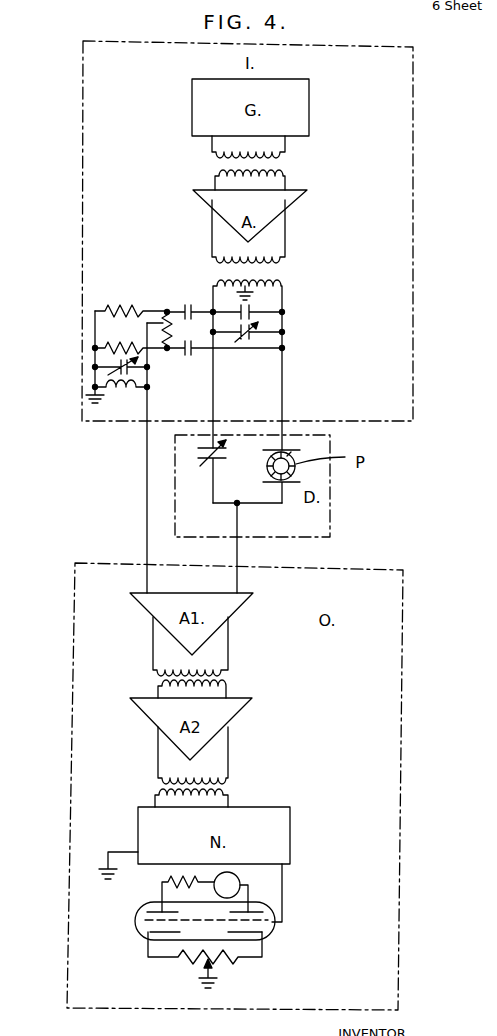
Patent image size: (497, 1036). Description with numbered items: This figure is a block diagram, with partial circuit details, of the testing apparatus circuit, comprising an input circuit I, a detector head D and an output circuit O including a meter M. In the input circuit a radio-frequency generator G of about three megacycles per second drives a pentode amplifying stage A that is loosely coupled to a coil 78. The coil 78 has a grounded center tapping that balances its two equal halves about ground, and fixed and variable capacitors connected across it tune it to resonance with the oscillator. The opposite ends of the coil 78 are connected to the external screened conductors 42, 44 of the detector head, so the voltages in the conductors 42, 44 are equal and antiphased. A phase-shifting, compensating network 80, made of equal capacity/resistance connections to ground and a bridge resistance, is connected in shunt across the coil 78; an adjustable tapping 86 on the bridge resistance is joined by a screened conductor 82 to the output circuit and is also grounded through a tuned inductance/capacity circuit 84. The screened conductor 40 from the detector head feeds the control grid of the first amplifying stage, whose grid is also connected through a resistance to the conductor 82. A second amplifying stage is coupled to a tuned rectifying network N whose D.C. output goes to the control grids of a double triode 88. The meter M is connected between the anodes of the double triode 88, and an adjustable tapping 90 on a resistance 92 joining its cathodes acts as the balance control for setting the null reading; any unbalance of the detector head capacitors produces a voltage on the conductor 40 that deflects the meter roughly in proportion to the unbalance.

The screened conductor 40 is at (237, 553).
The external screened conductor 42 is at (210, 427).
The external screened conductor 44 is at (282, 427).
The coil 78 is at (279, 282).
The phase-shifting compensating network 80 is at (102, 336).
The screened conductor 82 is at (146, 493).
The tuned inductance/capacity circuit 84 is at (108, 375).
The adjustable tapping 86 is at (159, 318).
The double triode 88 is at (205, 906).
The adjustable tapping 90 is at (213, 970).
The resistance 92 is at (183, 961).